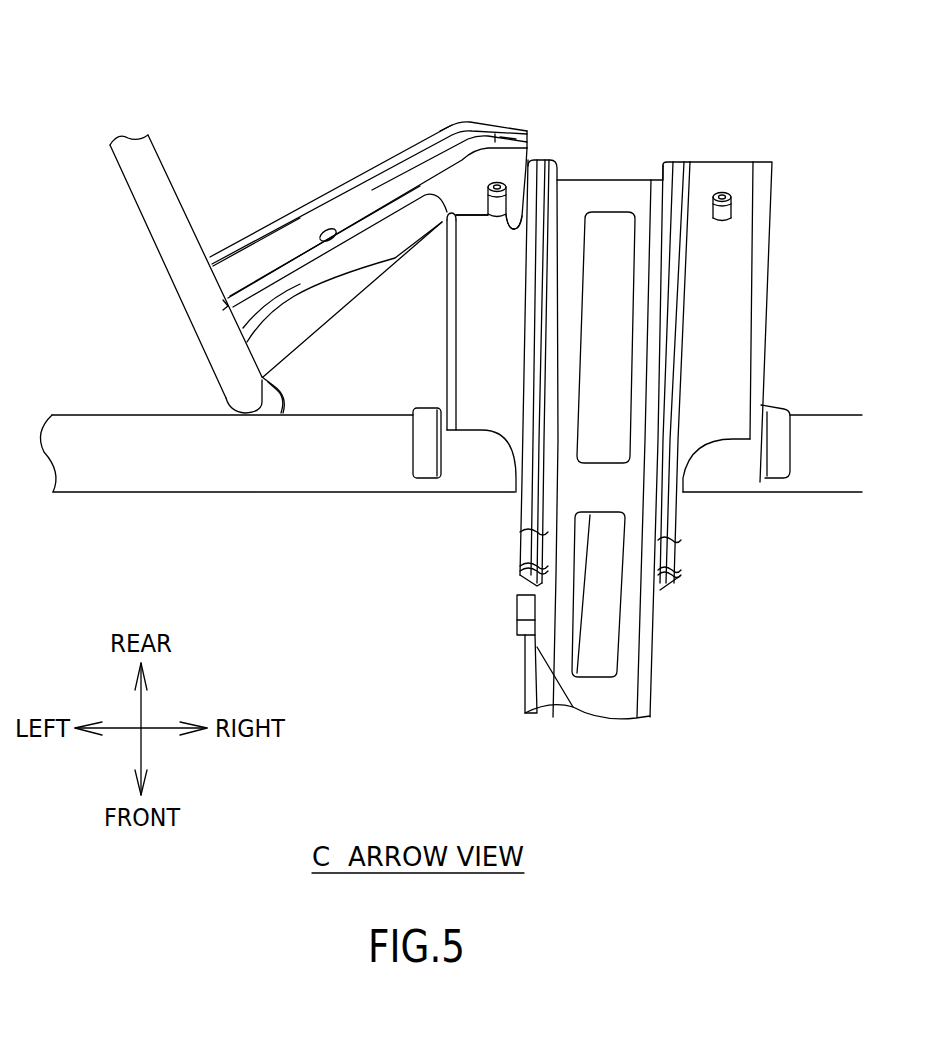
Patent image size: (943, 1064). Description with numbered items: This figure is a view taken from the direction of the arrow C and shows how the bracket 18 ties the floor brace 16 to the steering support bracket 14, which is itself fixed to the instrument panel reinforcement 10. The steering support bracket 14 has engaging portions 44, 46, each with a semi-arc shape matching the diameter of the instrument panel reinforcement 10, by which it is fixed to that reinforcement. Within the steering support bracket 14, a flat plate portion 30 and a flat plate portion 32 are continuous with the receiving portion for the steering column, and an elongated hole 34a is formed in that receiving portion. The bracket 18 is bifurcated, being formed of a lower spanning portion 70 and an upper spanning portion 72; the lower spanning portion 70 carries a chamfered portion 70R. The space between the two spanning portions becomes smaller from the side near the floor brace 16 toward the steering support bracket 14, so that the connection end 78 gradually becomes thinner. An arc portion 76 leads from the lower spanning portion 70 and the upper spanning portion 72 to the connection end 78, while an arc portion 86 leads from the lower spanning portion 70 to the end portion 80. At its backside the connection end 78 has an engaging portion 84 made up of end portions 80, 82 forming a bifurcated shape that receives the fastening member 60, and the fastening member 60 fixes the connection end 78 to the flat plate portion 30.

The instrument panel reinforcement 10 is at (220, 474).
The steering support bracket 14 is at (791, 135).
The floor brace 16 is at (157, 208).
The bracket 18 is at (326, 56).
The flat plate portion 30 is at (473, 390).
The flat plate portion 32 is at (607, 182).
The elongated hole 34a is at (620, 224).
The engaging portion 44 is at (422, 443).
The engaging portion 46 is at (778, 453).
The fastening member 60 is at (503, 182).
The lower spanning portion 70 is at (337, 290).
The chamfered portion 70R is at (398, 188).
The upper spanning portion 72 is at (297, 238).
The arc portion 76 is at (457, 126).
The connection end 78 is at (487, 157).
The end portion 80 is at (455, 230).
The end portion 82 is at (522, 212).
The engaging portion 84 is at (498, 228).
The arc portion 86 is at (448, 222).